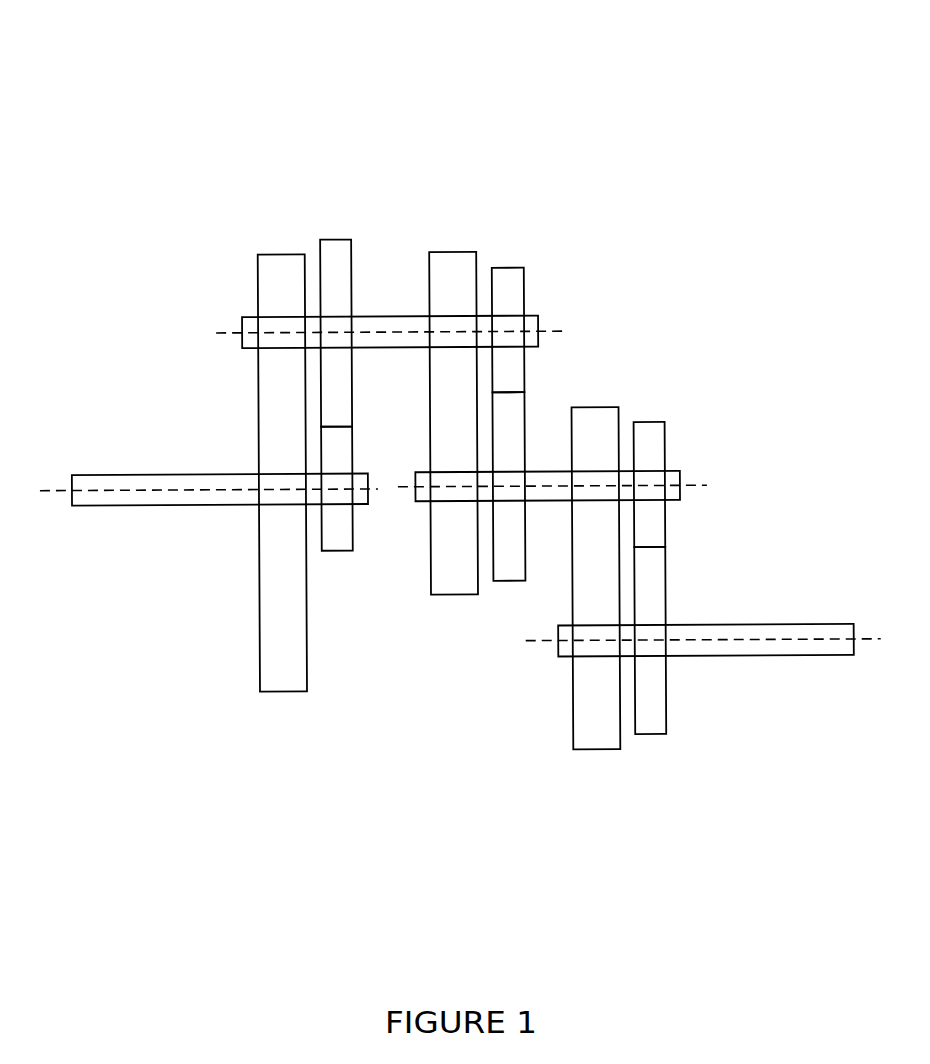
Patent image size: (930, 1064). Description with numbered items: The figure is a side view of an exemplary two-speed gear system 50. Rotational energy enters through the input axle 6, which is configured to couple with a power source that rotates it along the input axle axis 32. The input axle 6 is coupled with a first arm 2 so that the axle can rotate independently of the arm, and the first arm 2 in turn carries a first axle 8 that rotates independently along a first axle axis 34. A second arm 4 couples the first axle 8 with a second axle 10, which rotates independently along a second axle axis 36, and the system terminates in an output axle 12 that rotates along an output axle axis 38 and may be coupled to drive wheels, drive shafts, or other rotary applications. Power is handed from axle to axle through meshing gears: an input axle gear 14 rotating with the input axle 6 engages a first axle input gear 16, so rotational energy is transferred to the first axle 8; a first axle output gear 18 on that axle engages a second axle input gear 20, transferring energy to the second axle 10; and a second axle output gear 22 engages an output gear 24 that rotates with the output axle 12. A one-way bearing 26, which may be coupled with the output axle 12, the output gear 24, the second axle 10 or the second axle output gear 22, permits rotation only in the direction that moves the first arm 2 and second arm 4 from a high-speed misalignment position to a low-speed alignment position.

The first arm 2 is at (606, 751).
The second arm 4 is at (462, 595).
The input axle 6 is at (803, 625).
The first axle 8 is at (680, 470).
The second axle 10 is at (539, 315).
The output axle 12 is at (225, 473).
The input axle gear 14 is at (667, 690).
The first axle input gear 16 is at (665, 532).
The first axle output gear 18 is at (524, 412).
The second axle input gear 20 is at (505, 268).
The second axle output gear 22 is at (352, 254).
The output gear 24 is at (353, 535).
The one-way bearing 26 is at (275, 692).
The input axle axis 32 is at (733, 640).
The first axle axis 34 is at (707, 479).
The second axle axis 36 is at (567, 326).
The output axle axis 38 is at (167, 489).
The two-speed gear system 50 is at (731, 97).